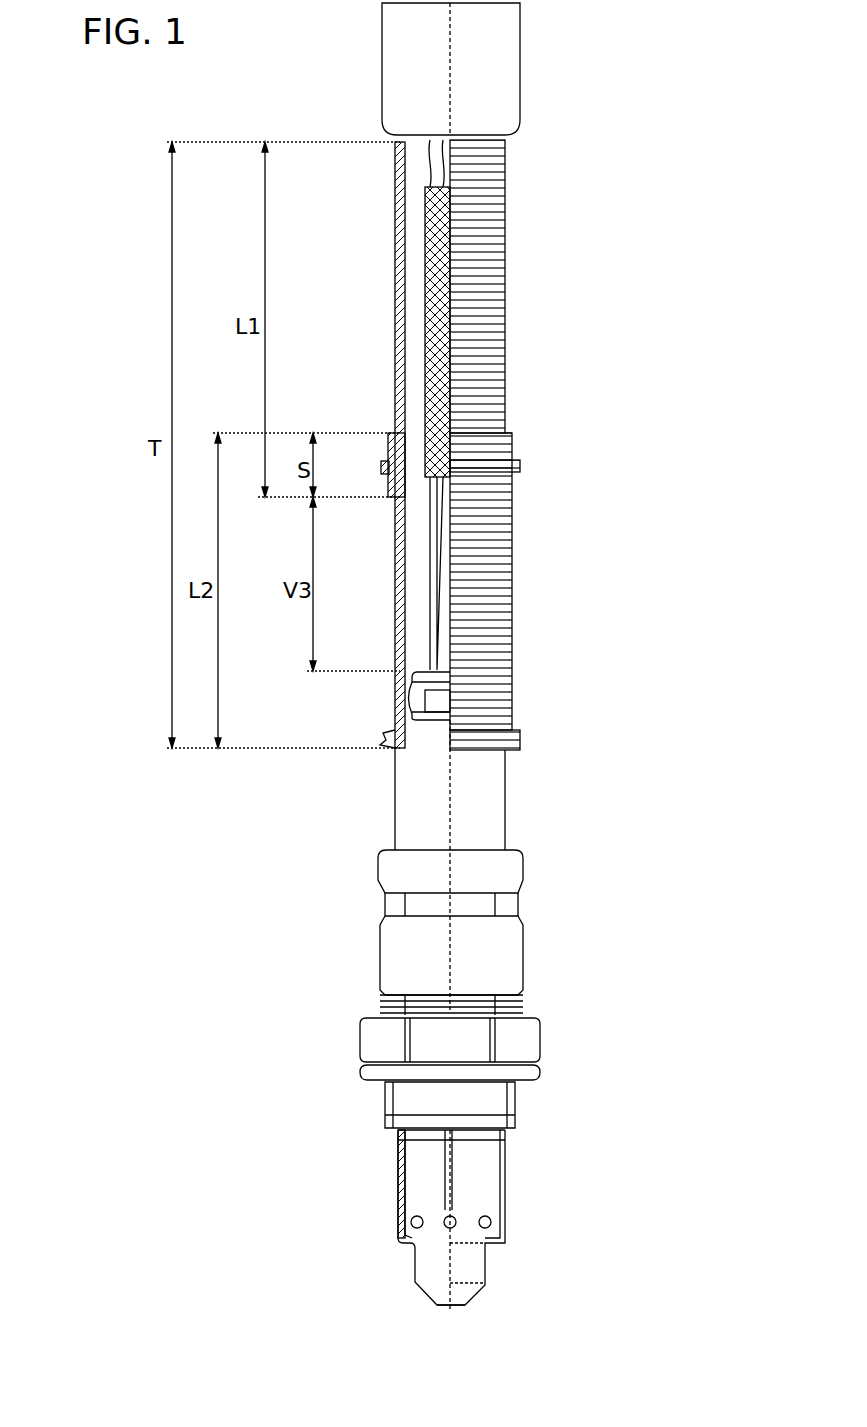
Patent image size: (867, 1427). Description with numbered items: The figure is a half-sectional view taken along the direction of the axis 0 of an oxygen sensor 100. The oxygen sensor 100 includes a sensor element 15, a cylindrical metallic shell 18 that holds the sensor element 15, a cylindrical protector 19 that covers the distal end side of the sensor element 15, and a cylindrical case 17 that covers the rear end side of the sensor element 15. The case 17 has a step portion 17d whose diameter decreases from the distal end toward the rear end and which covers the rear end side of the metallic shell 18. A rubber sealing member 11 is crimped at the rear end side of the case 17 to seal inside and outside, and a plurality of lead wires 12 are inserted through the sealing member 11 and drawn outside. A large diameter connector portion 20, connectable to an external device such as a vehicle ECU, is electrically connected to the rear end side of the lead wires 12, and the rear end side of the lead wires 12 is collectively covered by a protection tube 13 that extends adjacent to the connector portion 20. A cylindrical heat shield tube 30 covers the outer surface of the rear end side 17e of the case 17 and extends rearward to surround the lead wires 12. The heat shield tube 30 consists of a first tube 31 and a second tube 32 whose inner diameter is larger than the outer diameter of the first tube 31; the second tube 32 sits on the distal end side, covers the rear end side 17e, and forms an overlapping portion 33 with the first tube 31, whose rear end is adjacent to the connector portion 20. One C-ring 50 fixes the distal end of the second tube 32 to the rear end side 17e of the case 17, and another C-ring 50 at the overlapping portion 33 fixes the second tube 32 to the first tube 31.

The oxygen sensor 100 is at (650, 220).
The connector portion 20 is at (505, 83).
The protection tube 13 is at (395, 323).
The lead wires 12 is at (430, 655).
The first tube 31 is at (505, 325).
The second tube 32 is at (512, 540).
The overlapping portion 33 is at (520, 440).
The heat shield tube 30 is at (608, 308).
The C-ring 50 is at (545, 741).
The sealing member 11 is at (410, 690).
The rear end side of the case 17e is at (400, 745).
The step portion 17d is at (490, 850).
The case 17 is at (517, 940).
The metallic shell 18 is at (540, 1040).
The protector 19 is at (500, 1192).
The sensor element 15 is at (445, 1178).
The axis 0 is at (452, 1306).